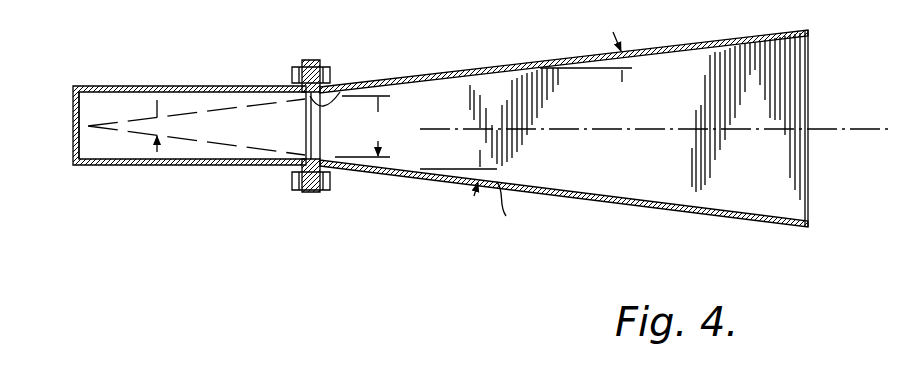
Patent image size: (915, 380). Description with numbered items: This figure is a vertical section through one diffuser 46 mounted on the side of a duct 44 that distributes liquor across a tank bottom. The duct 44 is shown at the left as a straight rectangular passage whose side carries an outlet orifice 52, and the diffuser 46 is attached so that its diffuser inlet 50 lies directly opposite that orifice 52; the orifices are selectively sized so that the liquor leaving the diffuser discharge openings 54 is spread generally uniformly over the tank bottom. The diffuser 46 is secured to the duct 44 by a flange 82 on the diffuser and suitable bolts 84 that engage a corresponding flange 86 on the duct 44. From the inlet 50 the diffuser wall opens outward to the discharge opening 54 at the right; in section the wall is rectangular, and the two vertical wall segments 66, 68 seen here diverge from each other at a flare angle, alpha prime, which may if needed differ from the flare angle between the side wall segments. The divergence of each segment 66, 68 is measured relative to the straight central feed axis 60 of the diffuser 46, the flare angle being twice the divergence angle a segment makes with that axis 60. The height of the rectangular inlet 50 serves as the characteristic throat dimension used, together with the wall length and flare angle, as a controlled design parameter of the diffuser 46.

The duct 44 is at (167, 168).
The diffuser 46 is at (591, 131).
The diffuser inlet 50 is at (338, 92).
The outlet orifice 52 is at (300, 128).
The diffuser discharge opening 54 is at (808, 70).
The central feed axis 60 is at (872, 130).
The vertical wall segment 66 is at (742, 31).
The vertical wall segment 68 is at (692, 212).
The flange 82 is at (318, 67).
The bolt 84 is at (330, 182).
The flange 86 is at (296, 68).